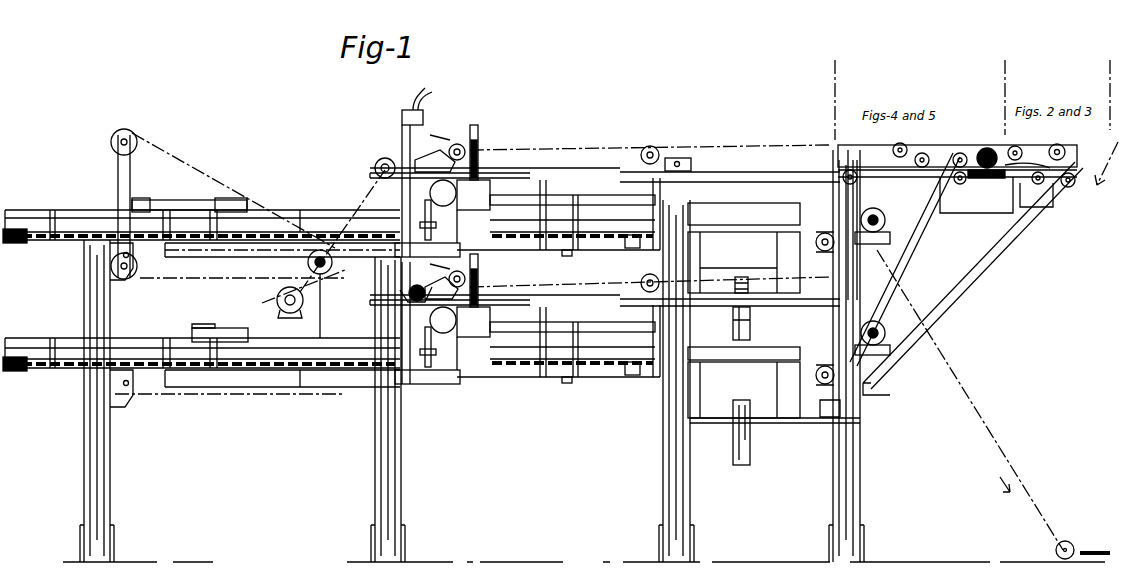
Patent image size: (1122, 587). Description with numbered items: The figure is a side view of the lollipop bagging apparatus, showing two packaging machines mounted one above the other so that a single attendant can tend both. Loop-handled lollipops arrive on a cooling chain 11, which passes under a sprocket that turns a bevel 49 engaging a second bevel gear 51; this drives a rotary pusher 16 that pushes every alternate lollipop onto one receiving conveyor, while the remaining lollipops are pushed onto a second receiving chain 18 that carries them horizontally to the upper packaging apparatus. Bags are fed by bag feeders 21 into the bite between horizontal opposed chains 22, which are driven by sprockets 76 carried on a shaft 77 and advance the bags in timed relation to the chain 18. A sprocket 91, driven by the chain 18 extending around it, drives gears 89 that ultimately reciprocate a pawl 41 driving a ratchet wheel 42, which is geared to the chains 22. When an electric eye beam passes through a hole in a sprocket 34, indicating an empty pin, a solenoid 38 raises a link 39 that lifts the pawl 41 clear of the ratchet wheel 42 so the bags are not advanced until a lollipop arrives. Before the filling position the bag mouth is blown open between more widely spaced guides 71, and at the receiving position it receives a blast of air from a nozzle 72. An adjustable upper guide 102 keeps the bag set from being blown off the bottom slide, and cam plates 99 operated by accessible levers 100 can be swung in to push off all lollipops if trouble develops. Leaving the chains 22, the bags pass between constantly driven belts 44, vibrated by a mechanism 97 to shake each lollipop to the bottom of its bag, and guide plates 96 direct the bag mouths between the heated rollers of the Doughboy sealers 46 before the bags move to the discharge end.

The cooling chain 11 is at (1070, 178).
The rotary pusher 16 is at (975, 178).
The second receiving chain 18 is at (583, 172).
The bag feeder 21 is at (730, 190).
The horizontal opposed chains 22 is at (558, 224).
The sprocket 34 is at (491, 190).
The solenoid 38 is at (424, 105).
The link 39 is at (438, 135).
The pawl 41 is at (435, 156).
The ratchet wheel 42 is at (392, 160).
The belts 44 is at (300, 387).
The Doughboy sealer 46 is at (230, 198).
The bevel 49 is at (1008, 150).
The second bevel gear 51 is at (995, 150).
The guides 71 is at (590, 216).
The nozzle 72 is at (479, 161).
The sprockets 76 is at (427, 239).
The shaft 77 is at (431, 220).
The gears 89 is at (460, 218).
The sprocket 91 is at (440, 195).
The guide plates 96 is at (306, 312).
The vibrating mechanism 97 is at (334, 263).
The cam plates 99 is at (568, 158).
The levers 100 is at (562, 250).
The upper guide 102 is at (606, 197).